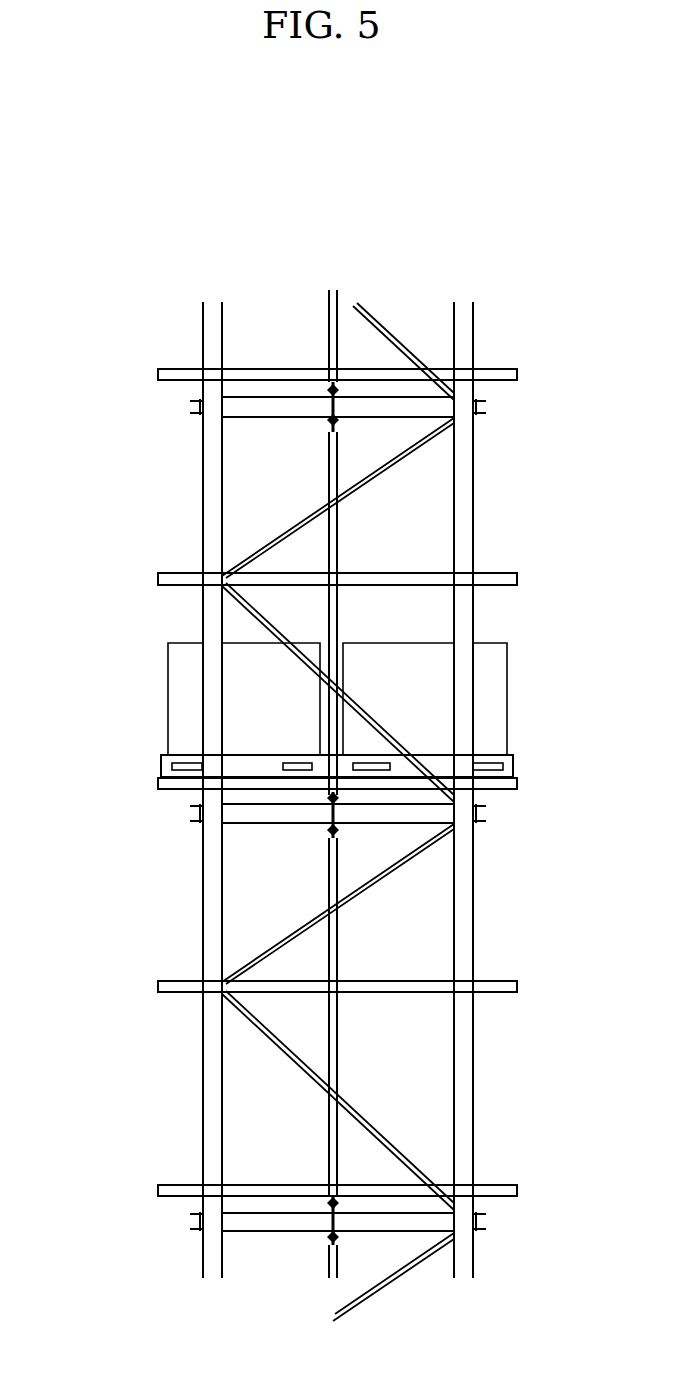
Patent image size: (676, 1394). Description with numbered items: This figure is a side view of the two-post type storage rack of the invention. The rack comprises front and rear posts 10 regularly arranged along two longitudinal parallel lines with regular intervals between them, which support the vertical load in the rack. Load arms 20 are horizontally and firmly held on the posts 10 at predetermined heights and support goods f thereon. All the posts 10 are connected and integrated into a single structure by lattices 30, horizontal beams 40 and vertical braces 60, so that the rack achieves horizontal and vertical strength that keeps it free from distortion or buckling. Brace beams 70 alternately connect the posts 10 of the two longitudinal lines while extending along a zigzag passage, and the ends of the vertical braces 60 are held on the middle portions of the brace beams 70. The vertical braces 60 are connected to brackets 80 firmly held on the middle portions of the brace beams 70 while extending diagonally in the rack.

The front and rear posts 10 is at (463, 485).
The load arms 20 is at (433, 573).
The lattices 30 is at (380, 877).
The horizontal beams 40 is at (475, 818).
The vertical braces 60 is at (337, 1077).
The brace beams 70 is at (398, 1210).
The brackets 80 is at (335, 1220).
The goods f is at (168, 710).